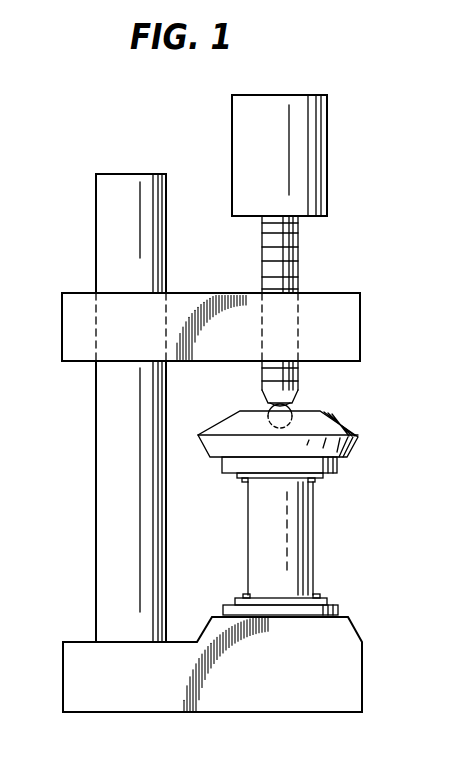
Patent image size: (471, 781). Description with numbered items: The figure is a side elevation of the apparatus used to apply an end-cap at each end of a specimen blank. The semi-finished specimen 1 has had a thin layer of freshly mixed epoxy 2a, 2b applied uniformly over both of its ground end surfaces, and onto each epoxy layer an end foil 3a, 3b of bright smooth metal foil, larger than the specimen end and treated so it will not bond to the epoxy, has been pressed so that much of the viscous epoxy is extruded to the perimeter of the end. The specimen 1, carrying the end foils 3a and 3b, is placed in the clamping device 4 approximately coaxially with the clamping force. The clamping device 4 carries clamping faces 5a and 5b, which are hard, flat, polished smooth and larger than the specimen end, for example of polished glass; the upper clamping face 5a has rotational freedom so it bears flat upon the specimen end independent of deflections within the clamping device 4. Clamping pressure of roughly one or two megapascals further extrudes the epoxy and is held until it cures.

The semi-finished specimen 1 is at (302, 522).
The epoxy layer 2a is at (290, 476).
The epoxy layer 2b is at (283, 598).
The end foil 3a is at (322, 467).
The end foil 3b is at (327, 604).
The clamping device 4 is at (102, 463).
The clamping face 5a is at (358, 440).
The clamping face 5b is at (304, 610).